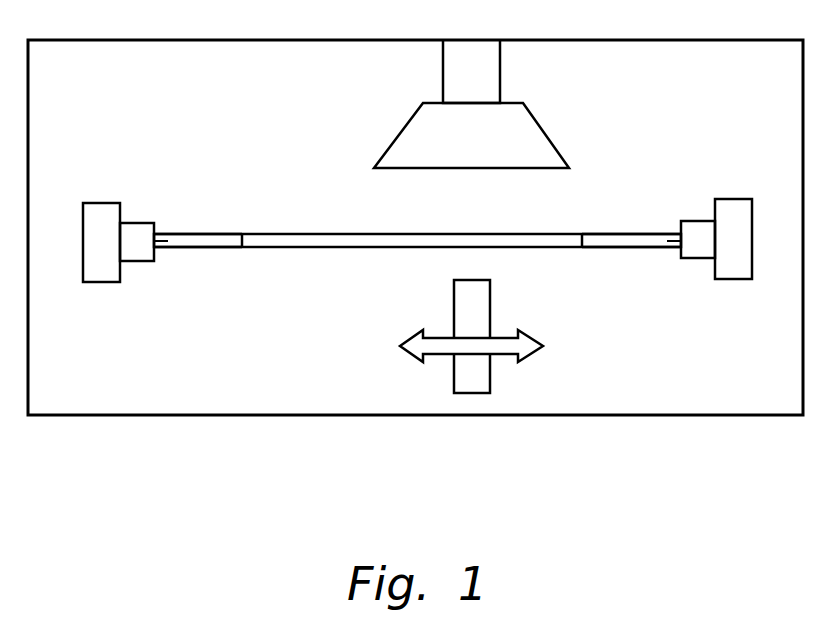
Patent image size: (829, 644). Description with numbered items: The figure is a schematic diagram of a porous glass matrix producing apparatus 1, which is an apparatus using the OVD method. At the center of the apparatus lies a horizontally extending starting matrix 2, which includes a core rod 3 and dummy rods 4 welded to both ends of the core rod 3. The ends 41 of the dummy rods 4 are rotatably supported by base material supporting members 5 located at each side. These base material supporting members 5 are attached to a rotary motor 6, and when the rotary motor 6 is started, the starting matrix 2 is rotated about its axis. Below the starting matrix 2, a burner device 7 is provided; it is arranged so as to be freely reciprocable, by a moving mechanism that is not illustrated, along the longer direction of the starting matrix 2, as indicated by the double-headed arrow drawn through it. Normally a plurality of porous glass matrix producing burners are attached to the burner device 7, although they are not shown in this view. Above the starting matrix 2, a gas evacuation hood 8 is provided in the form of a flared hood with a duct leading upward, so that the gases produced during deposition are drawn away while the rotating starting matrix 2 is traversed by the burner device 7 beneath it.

The porous glass matrix producing apparatus 1 is at (212, 107).
The starting matrix 2 is at (350, 220).
The core rod 3 is at (306, 248).
The dummy rods 4 is at (203, 240).
The ends 41 is at (160, 241).
The base material supporting members 5 is at (140, 250).
The rotary motor 6 is at (100, 212).
The burner device 7 is at (480, 312).
The gas evacuation hood 8 is at (533, 130).